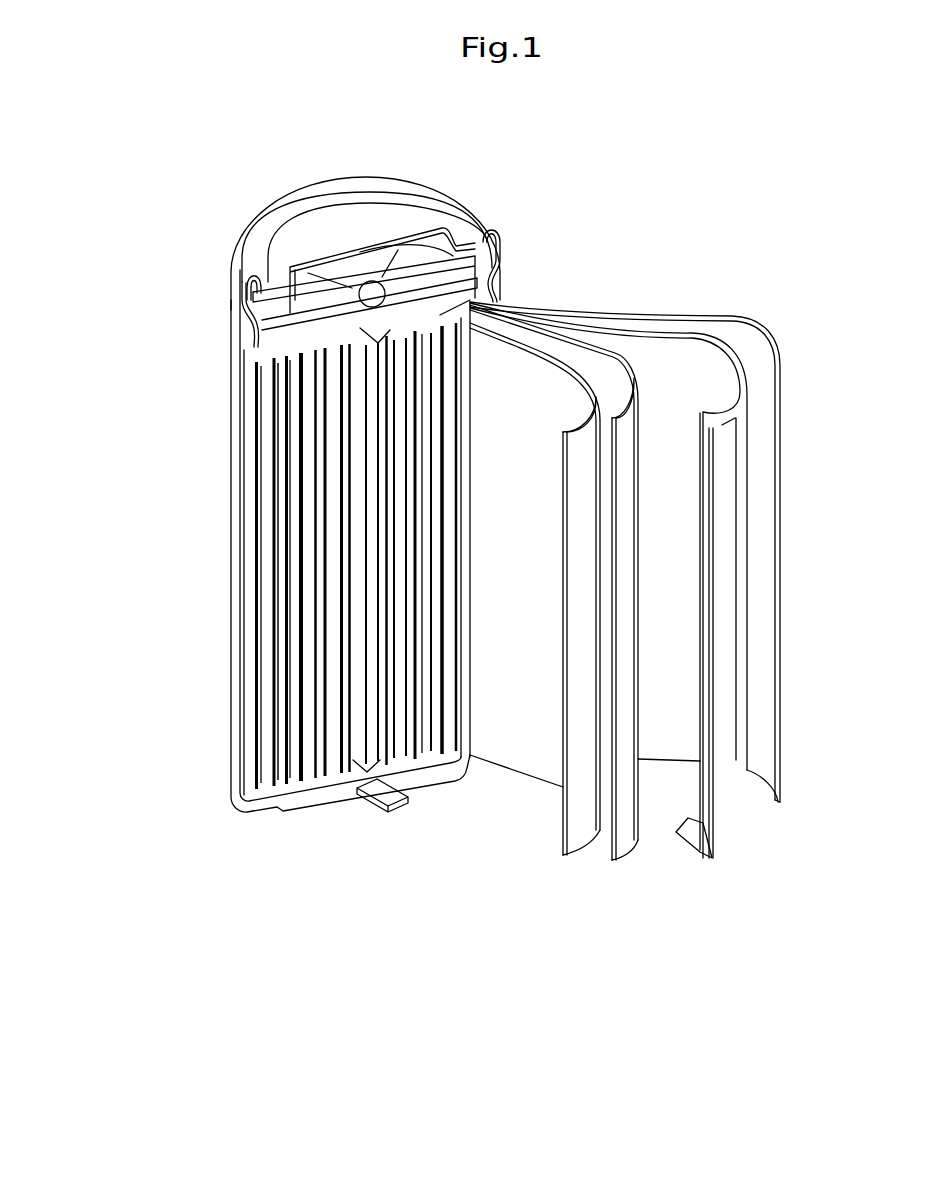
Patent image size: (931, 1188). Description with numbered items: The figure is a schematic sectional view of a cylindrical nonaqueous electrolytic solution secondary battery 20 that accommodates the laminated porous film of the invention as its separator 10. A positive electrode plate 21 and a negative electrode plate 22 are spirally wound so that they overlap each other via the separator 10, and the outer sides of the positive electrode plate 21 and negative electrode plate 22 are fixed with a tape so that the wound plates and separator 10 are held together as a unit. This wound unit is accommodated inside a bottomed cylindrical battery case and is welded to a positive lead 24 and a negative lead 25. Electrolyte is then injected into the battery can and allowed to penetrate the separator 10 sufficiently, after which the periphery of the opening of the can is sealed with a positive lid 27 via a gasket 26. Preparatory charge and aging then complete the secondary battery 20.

The separator 10 is at (618, 860).
The cylindrical nonaqueous electrolytic solution secondary battery 20 is at (217, 468).
The positive electrode plate 21 is at (536, 770).
The negative electrode plate 22 is at (676, 744).
The positive lead 24 is at (372, 290).
The negative lead 25 is at (732, 848).
The gasket 26 is at (257, 334).
The positive lid 27 is at (345, 223).